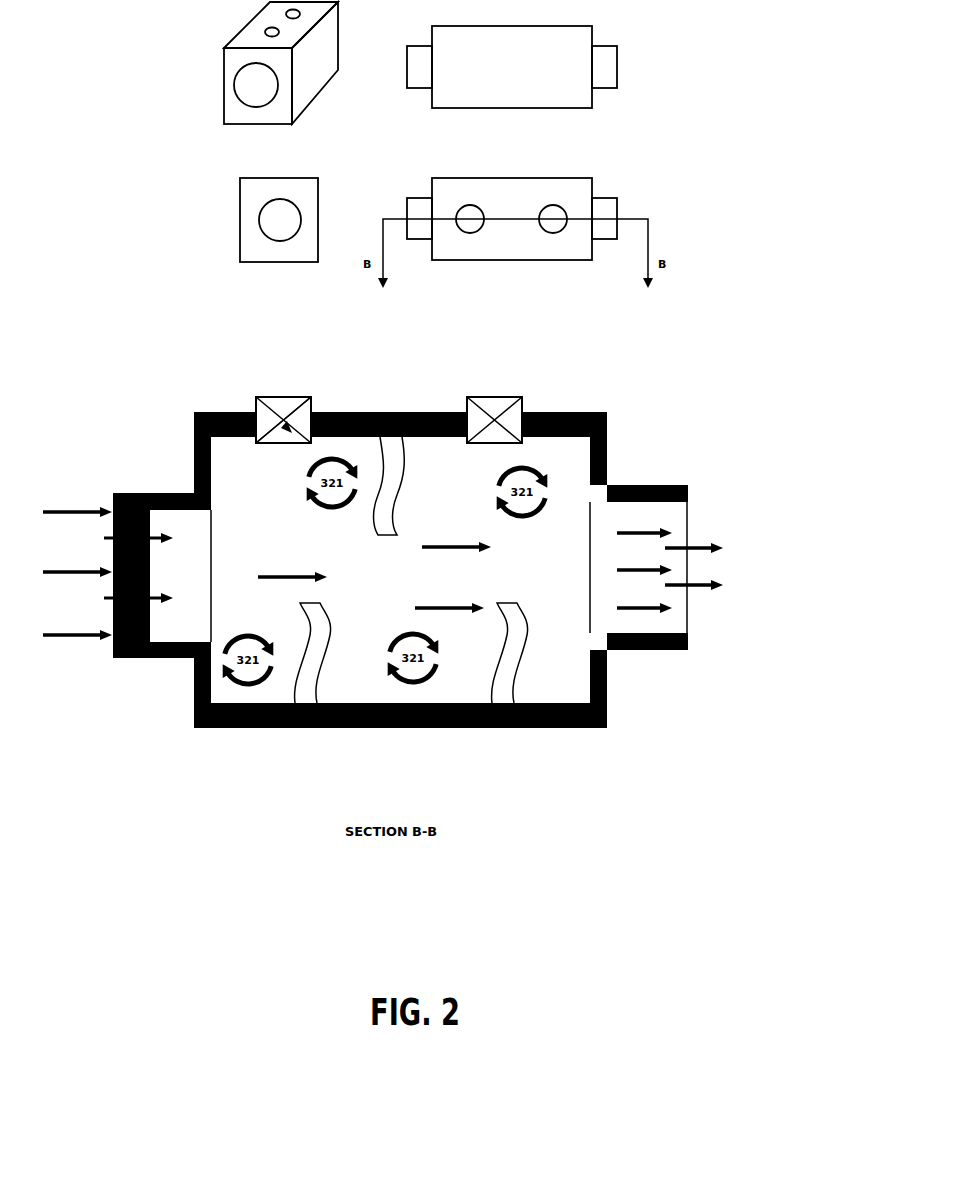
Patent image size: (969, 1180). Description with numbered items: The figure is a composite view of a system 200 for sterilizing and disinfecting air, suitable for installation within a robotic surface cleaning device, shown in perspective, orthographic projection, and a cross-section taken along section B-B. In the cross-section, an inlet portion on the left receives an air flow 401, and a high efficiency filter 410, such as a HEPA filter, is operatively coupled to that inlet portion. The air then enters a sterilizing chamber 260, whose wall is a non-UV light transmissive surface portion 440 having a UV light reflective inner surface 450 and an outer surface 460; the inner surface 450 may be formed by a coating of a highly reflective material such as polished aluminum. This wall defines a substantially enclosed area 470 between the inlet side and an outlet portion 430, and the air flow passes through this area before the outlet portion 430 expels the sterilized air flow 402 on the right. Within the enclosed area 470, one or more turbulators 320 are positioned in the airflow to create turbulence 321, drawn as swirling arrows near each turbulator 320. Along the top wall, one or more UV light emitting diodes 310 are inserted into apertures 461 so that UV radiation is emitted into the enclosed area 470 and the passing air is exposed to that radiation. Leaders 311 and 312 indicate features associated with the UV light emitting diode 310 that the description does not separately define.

The system 200 is at (153, 49).
The sterilizing chamber 260 is at (588, 404).
The UV light emitting diode 310 is at (278, 397).
The first port passage 311 is at (322, 402).
The second port passage 312 is at (288, 389).
The turbulator 320 is at (370, 508).
The turbulence 321 is at (385, 571).
The air flow 401 is at (108, 573).
The sterilized air flow 402 is at (673, 570).
The high efficiency filter 410 is at (146, 670).
The outlet portion 430 is at (688, 508).
The non-UV light transmissive surface portion 440 is at (217, 412).
The UV light reflective inner surface 450 is at (562, 691).
The outer surface 460 is at (580, 730).
The aperture 461 is at (329, 408).
The substantially enclosed area 470 is at (374, 577).